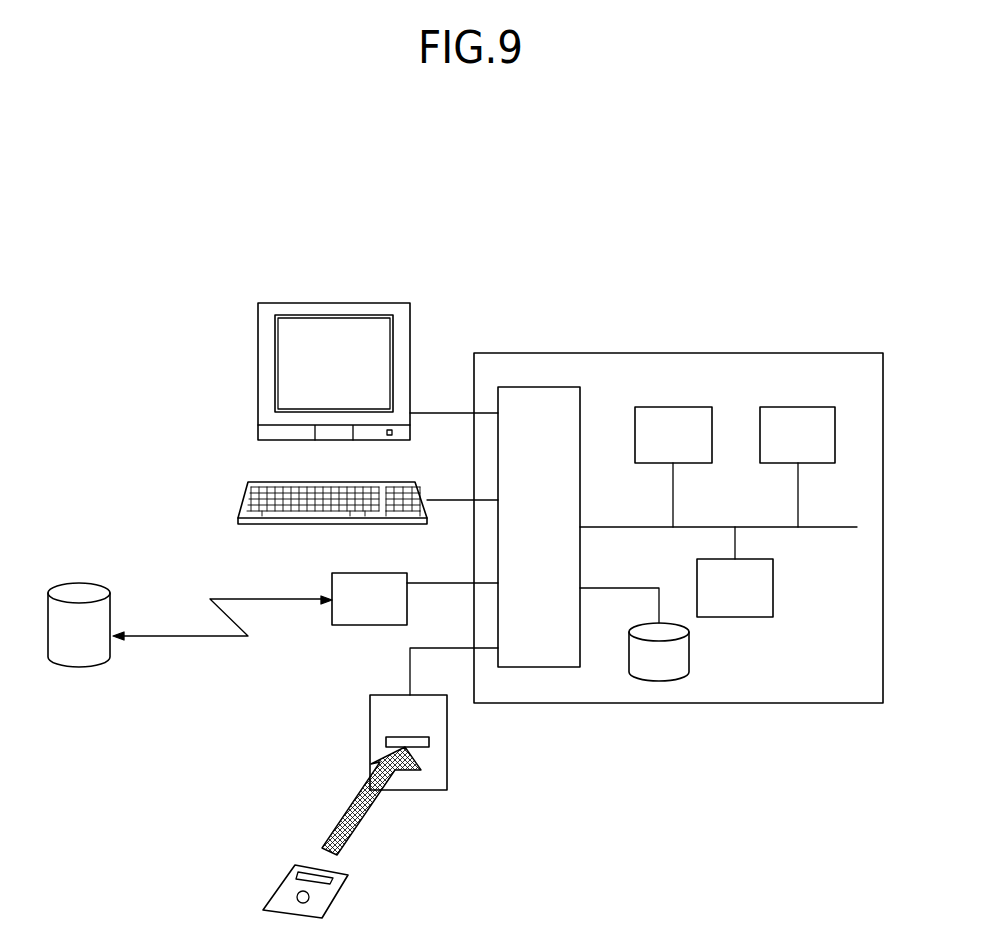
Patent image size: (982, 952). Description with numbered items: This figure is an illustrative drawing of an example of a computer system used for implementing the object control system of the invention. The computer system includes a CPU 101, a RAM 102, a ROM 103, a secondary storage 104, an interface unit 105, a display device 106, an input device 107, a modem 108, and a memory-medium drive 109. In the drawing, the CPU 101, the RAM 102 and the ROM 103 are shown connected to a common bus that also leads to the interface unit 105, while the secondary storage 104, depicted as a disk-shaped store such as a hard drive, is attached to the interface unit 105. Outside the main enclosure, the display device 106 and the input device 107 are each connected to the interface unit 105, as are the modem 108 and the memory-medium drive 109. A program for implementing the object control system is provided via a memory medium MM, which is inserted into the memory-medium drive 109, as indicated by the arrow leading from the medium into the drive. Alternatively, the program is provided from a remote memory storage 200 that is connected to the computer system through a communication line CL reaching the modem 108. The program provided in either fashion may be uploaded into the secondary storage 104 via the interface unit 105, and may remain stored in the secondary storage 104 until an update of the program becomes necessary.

The CPU 101 is at (678, 405).
The RAM 102 is at (803, 405).
The ROM 103 is at (773, 592).
The secondary storage 104 is at (689, 645).
The interface unit 105 is at (580, 420).
The display device 106 is at (364, 303).
The input device 107 is at (243, 497).
The modem 108 is at (350, 627).
The memory-medium drive 109 is at (447, 763).
The remote memory storage 200 is at (80, 672).
The communication line CL is at (195, 636).
The memory medium MM is at (305, 904).